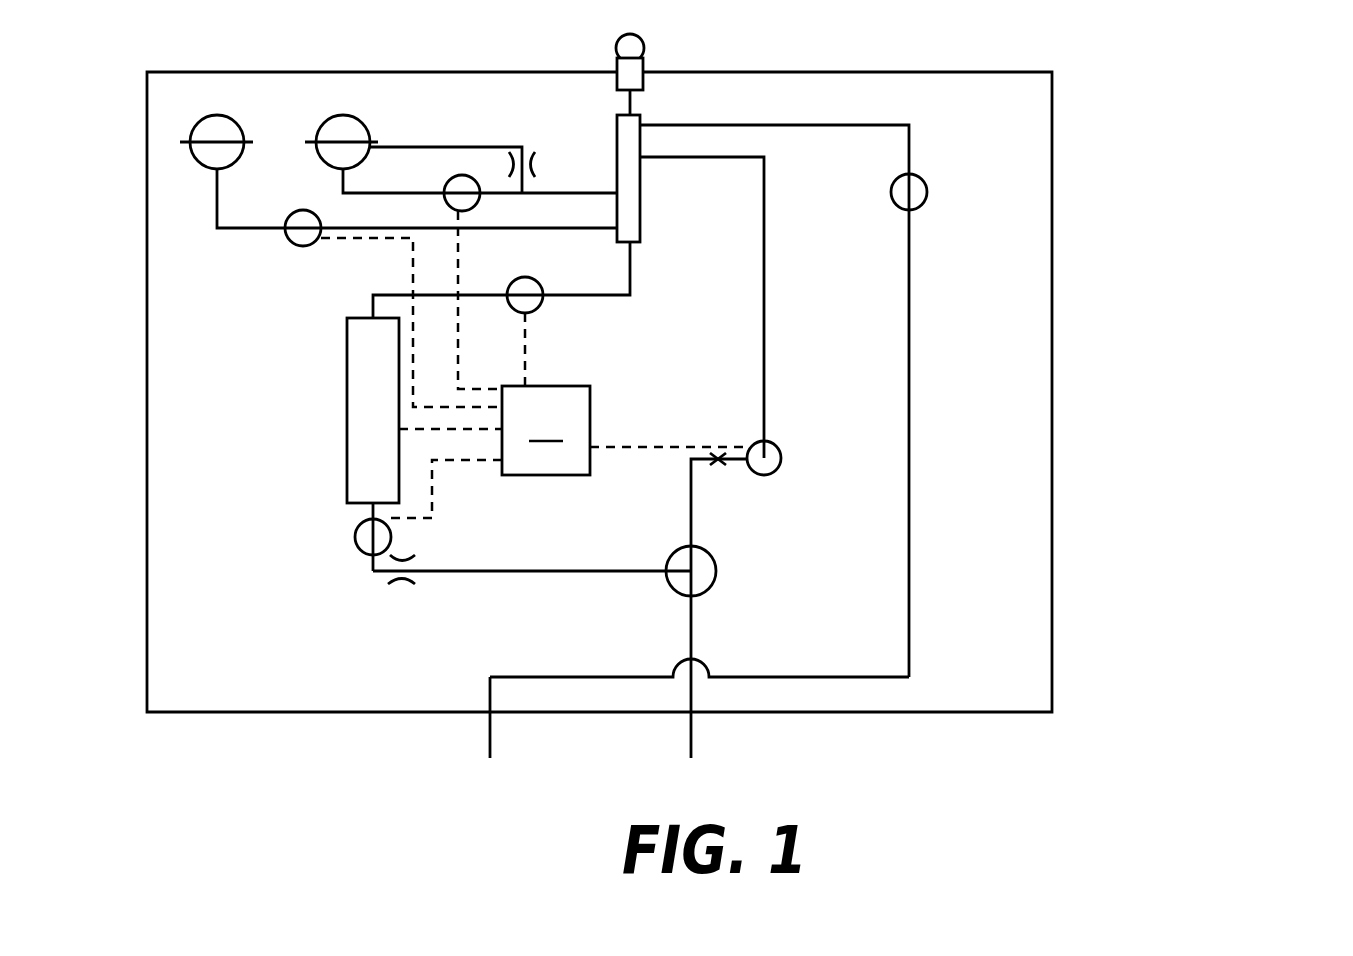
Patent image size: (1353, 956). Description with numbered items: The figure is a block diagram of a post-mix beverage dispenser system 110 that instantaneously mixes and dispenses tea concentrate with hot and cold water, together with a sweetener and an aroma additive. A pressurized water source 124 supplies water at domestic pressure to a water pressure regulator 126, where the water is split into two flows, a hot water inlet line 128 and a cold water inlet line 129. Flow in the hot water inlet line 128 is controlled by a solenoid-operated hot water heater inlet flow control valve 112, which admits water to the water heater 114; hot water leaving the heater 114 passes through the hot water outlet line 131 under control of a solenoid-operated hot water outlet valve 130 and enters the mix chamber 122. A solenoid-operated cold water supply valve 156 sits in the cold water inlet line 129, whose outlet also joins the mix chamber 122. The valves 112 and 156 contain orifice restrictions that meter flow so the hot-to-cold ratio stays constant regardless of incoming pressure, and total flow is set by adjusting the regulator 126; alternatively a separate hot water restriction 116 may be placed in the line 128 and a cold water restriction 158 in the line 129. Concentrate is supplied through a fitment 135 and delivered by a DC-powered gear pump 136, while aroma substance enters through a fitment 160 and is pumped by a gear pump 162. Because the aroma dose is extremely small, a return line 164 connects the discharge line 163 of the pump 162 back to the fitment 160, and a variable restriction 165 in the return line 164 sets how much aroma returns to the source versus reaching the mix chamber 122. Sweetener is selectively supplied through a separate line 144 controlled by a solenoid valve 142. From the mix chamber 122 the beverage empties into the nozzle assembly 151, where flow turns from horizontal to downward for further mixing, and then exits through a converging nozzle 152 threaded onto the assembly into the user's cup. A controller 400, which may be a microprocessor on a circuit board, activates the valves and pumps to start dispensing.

The beverage dispenser system 110 is at (1176, 131).
The hot water heater inlet flow control valve 112 is at (391, 537).
The water heater 114 is at (347, 440).
The hot water restriction 116 is at (400, 584).
The mix chamber 122 is at (640, 198).
The pressurized water source 124 is at (692, 732).
The water pressure regulator 126 is at (717, 570).
The hot water inlet line 128 is at (485, 572).
The cold water inlet line 129 is at (693, 507).
The hot water outlet valve 130 is at (540, 308).
The hot water outlet line 131 is at (449, 296).
The fitment 135 is at (237, 117).
The gear pump 136 is at (298, 248).
The solenoid valve 142 is at (927, 192).
The separate line 144 is at (492, 732).
The nozzle assembly 151 is at (643, 82).
The converging nozzle 152 is at (643, 62).
The cold water supply valve 156 is at (780, 447).
The cold water restriction 158 is at (718, 470).
The fitment 160 is at (353, 118).
The gear pump 162 is at (463, 211).
The discharge line 163 is at (567, 192).
The return line 164 is at (440, 146).
The variable restriction 165 is at (530, 155).
The controller 400 is at (533, 378).